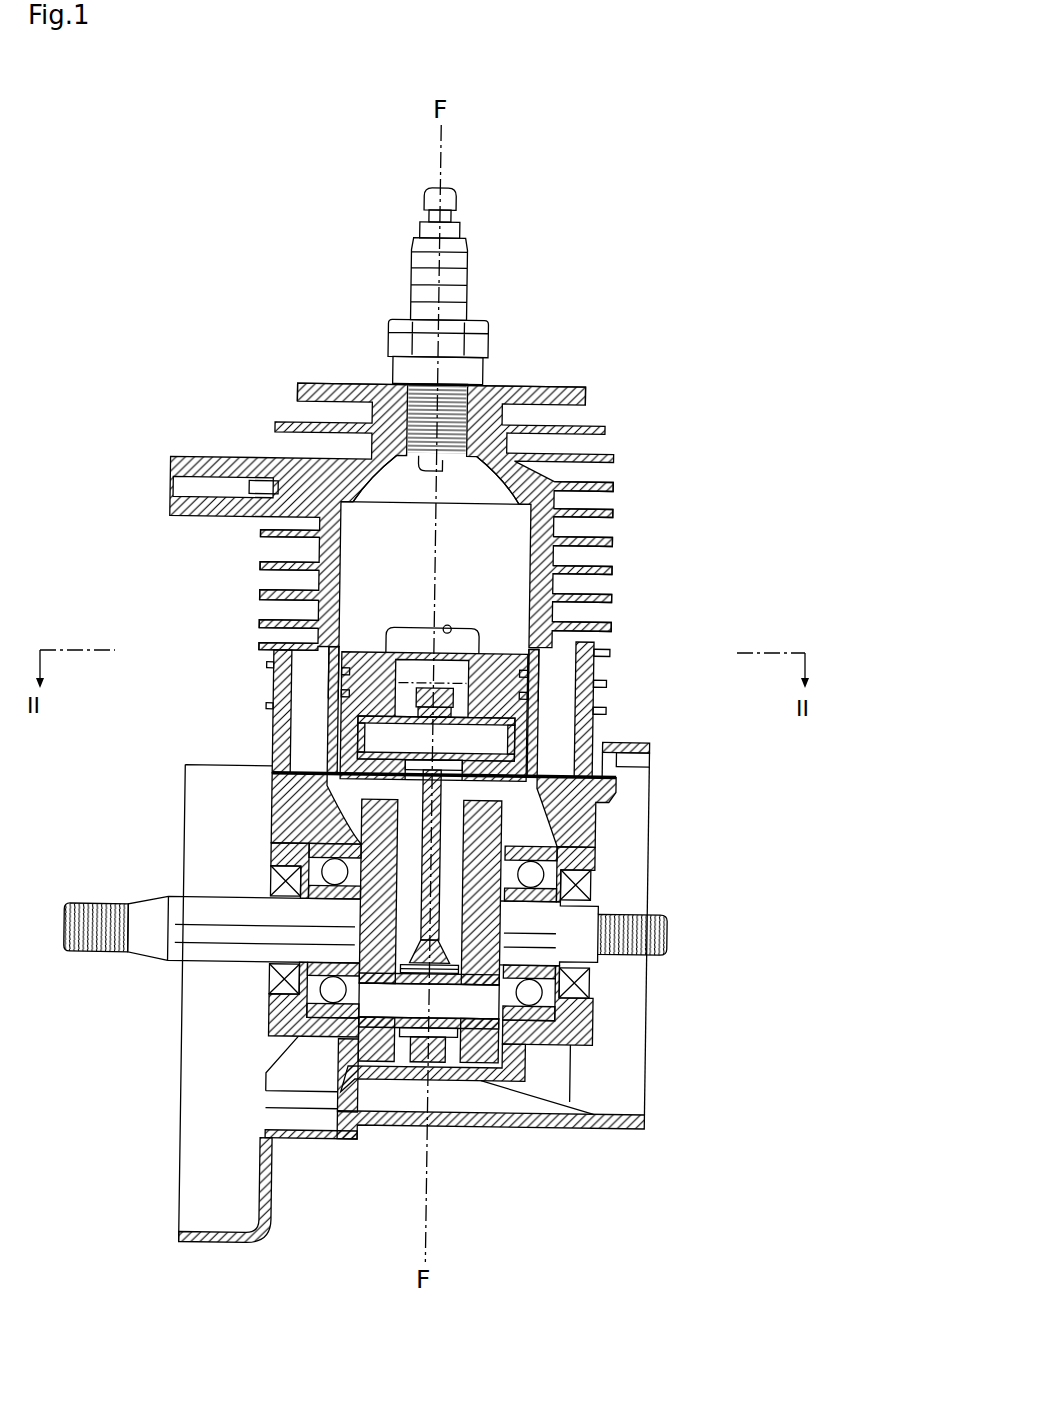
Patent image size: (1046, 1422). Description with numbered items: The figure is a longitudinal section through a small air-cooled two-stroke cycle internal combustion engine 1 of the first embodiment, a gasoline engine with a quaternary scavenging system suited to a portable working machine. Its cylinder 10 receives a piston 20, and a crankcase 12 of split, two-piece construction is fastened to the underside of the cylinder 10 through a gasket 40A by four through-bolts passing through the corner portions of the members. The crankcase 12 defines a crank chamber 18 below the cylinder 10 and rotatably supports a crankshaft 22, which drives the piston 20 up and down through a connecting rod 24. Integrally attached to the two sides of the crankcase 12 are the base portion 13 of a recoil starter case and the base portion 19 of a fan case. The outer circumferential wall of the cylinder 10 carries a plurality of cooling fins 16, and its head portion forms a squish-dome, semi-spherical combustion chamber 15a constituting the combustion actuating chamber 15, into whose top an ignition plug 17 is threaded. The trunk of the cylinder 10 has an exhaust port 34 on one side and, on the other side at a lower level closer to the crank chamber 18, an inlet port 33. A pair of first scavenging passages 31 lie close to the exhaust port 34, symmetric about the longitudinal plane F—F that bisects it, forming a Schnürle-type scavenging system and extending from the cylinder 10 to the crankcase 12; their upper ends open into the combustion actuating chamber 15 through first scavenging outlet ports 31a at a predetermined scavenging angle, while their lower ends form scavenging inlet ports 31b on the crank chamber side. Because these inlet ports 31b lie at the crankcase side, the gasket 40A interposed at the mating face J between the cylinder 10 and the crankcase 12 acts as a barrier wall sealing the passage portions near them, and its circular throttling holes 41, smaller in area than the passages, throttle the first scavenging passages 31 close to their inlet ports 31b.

The two-stroke cycle internal combustion engine 1 is at (150, 295).
The cylinder 10 is at (540, 380).
The crankcase 12 is at (563, 1053).
The base portion of a recoil starter case 13 is at (633, 1018).
The combustion actuating chamber 15 is at (318, 525).
The combustion chamber 15a is at (468, 468).
The cooling fins 16 is at (607, 572).
The ignition plug 17 is at (413, 452).
The crank chamber 18 is at (403, 1063).
The base portion of a fan case 19 is at (220, 1240).
The piston 20 is at (273, 667).
The crankshaft 22 is at (223, 964).
The connecting rod 24 is at (445, 838).
The first scavenging passages 31 is at (310, 697).
The first scavenging outlet ports 31a is at (358, 640).
The scavenging inlet ports 31b is at (300, 808).
The inlet port 33 is at (410, 640).
The exhaust port 34 is at (447, 626).
The gasket 40A is at (268, 775).
The throttling holes 41 is at (270, 745).
The mating face J is at (650, 777).